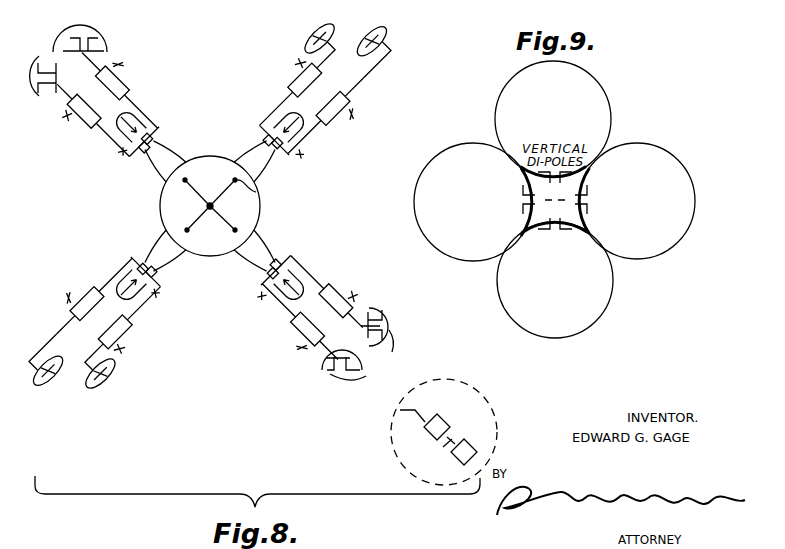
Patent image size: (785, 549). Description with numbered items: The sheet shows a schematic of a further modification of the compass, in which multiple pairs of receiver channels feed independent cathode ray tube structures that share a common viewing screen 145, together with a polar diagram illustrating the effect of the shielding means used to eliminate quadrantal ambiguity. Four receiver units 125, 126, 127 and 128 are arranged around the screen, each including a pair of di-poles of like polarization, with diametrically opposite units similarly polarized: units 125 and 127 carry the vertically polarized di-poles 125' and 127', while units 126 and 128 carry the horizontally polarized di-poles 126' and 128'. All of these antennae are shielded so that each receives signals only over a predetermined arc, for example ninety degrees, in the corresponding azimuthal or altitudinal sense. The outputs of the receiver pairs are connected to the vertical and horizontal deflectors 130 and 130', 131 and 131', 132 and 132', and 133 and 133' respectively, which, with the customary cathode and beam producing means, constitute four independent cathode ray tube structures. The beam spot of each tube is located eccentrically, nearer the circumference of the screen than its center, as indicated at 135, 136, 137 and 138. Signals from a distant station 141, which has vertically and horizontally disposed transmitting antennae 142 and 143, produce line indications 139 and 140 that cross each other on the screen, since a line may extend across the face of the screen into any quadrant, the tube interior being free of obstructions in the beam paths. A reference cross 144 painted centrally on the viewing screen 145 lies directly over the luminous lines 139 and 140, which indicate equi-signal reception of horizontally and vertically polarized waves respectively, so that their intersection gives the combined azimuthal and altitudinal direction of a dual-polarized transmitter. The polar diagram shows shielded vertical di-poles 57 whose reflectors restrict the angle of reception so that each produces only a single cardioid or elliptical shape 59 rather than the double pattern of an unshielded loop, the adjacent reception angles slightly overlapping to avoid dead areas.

In FIG. 8, the receiver unit 125 is at (128, 83).
In FIG. 8, the vertically polarized di-pole 125' is at (67, 60).
In FIG. 8, the receiver unit 126 is at (340, 116).
In FIG. 8, the horizontally polarized di-pole 126' is at (350, 47).
In FIG. 8, the receiver unit 127 is at (299, 329).
In FIG. 8, the vertically polarized di-pole 127' is at (363, 344).
In FIG. 8, the receiver unit 128 is at (127, 342).
In FIG. 8, the horizontally polarized di-pole 128' is at (69, 367).
In FIG. 8, the vertical deflector 130 is at (150, 114).
In FIG. 8, the horizontal deflector 130' is at (161, 131).
In FIG. 8, the vertical deflector 131 is at (281, 114).
In FIG. 8, the horizontal deflector 131' is at (255, 135).
In FIG. 8, the vertical deflector 132 is at (307, 276).
In FIG. 8, the horizontal deflector 132' is at (284, 254).
In FIG. 8, the vertical deflector 133 is at (143, 298).
In FIG. 8, the horizontal deflector 133' is at (170, 282).
In FIG. 8, the beam spot 135 is at (203, 159).
In FIG. 8, the beam spot 136 is at (256, 192).
In FIG. 8, the beam spot 137 is at (235, 230).
In FIG. 8, the beam spot 138 is at (187, 230).
In FIG. 8, the line indication 139 is at (198, 214).
In FIG. 8, the line indication 140 is at (198, 195).
In FIG. 8, the reference cross 144 is at (210, 203).
In FIG. 8, the viewing screen 145 is at (250, 216).
In FIG. 8, the distant station 141 is at (490, 421).
In FIG. 8, the vertically disposed transmitting antenna 142 is at (458, 441).
In FIG. 8, the horizontally disposed transmitting antenna 143 is at (430, 410).
In FIG. 9, the vertical di-pole 57 is at (584, 204).
In FIG. 9, the cardioid or elliptical shape 59 is at (688, 205).